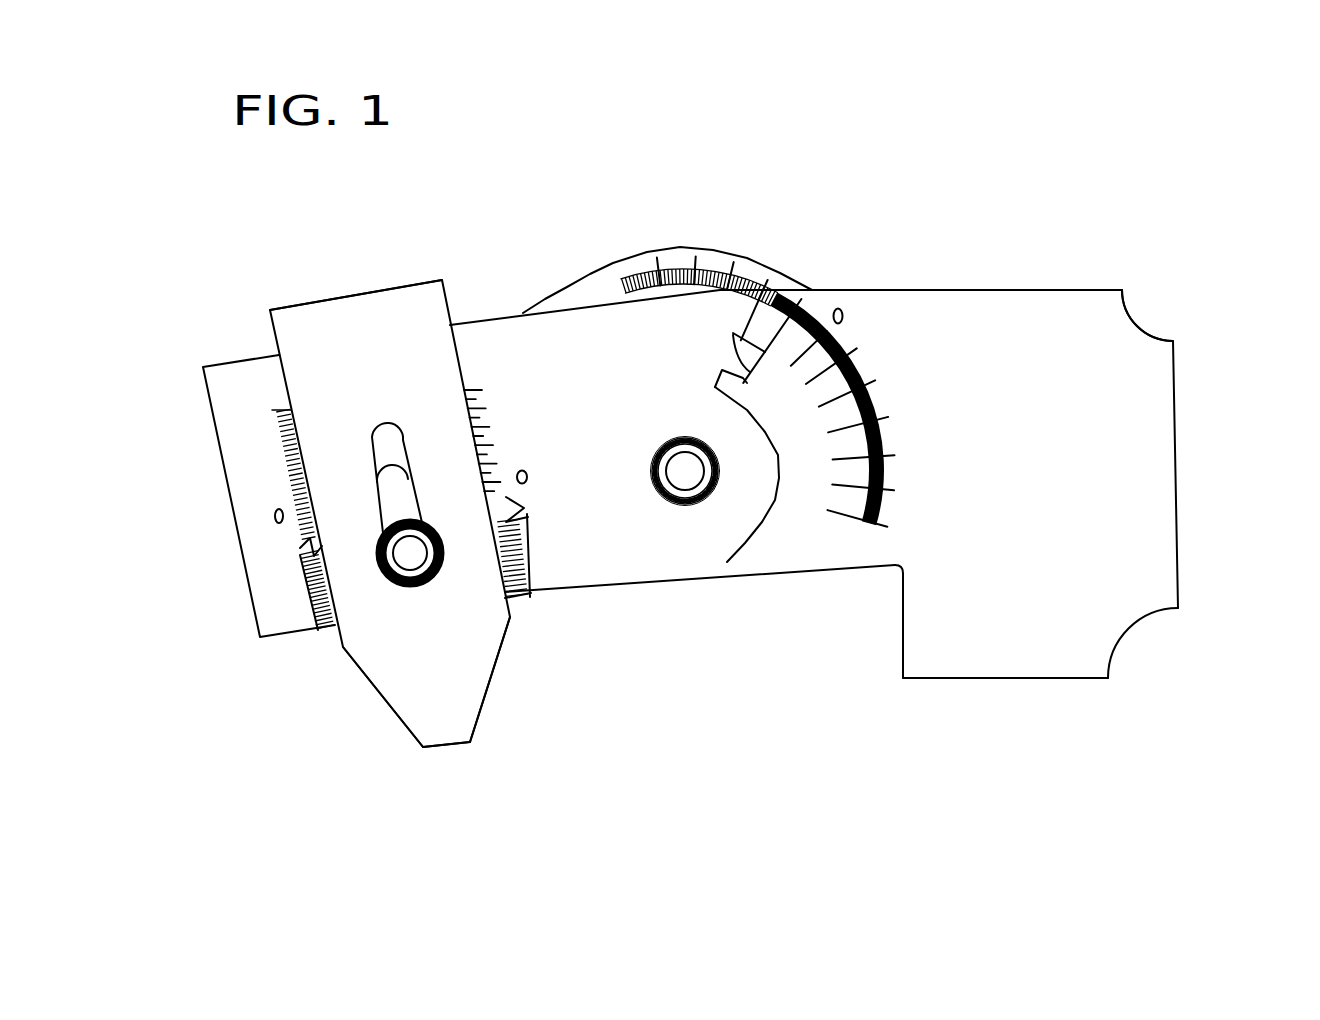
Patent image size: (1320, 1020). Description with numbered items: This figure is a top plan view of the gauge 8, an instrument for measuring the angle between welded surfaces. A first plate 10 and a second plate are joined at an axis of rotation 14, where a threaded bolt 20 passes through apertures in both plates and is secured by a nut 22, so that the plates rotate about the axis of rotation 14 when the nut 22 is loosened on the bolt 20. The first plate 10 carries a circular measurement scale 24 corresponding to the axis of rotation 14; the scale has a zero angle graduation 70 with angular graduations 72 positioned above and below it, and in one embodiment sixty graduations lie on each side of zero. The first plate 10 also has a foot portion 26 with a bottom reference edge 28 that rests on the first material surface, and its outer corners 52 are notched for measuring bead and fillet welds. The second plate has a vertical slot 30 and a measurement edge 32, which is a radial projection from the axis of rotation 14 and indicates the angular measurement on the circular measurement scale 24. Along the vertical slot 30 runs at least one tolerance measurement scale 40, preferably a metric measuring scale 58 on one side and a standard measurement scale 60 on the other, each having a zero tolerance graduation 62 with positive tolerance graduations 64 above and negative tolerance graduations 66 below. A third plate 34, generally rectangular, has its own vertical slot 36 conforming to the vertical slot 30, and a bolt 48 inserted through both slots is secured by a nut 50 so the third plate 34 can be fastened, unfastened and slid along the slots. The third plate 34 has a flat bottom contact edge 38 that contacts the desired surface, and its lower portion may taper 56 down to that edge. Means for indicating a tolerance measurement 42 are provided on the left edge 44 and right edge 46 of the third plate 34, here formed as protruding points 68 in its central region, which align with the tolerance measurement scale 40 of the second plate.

The gauge 8 is at (712, 183).
The first plate 10 is at (1098, 447).
The axis of rotation 14 is at (663, 512).
The threaded bolt 20 is at (687, 478).
The nut 22 is at (710, 503).
The circular measurement scale 24 is at (850, 315).
The foot portion 26 is at (1003, 643).
The bottom reference edge 28 is at (995, 683).
The vertical slot 30 is at (405, 500).
The measurement edge 32 is at (742, 338).
The third plate 34 is at (363, 340).
The vertical slot 36 is at (388, 445).
The bottom contact edge 38 is at (443, 747).
The tolerance measurement scale 40 is at (277, 458).
The means for indicating a tolerance measurement 42 is at (523, 593).
The left edge 44 is at (270, 348).
The right edge 46 is at (450, 303).
The bolt 48 is at (440, 577).
The nut 50 is at (410, 553).
The outer corners 52 is at (1148, 312).
The taper 56 is at (488, 700).
The metric measuring scale 58 is at (252, 432).
The standard measurement scale 60 is at (567, 560).
The zero tolerance graduation 62 is at (270, 520).
The positive tolerance graduations 64 is at (263, 495).
The negative tolerance graduations 66 is at (257, 587).
The protruding points 68 is at (323, 627).
The zero angle graduation 70 is at (840, 335).
The angular graduations 72 is at (887, 373).